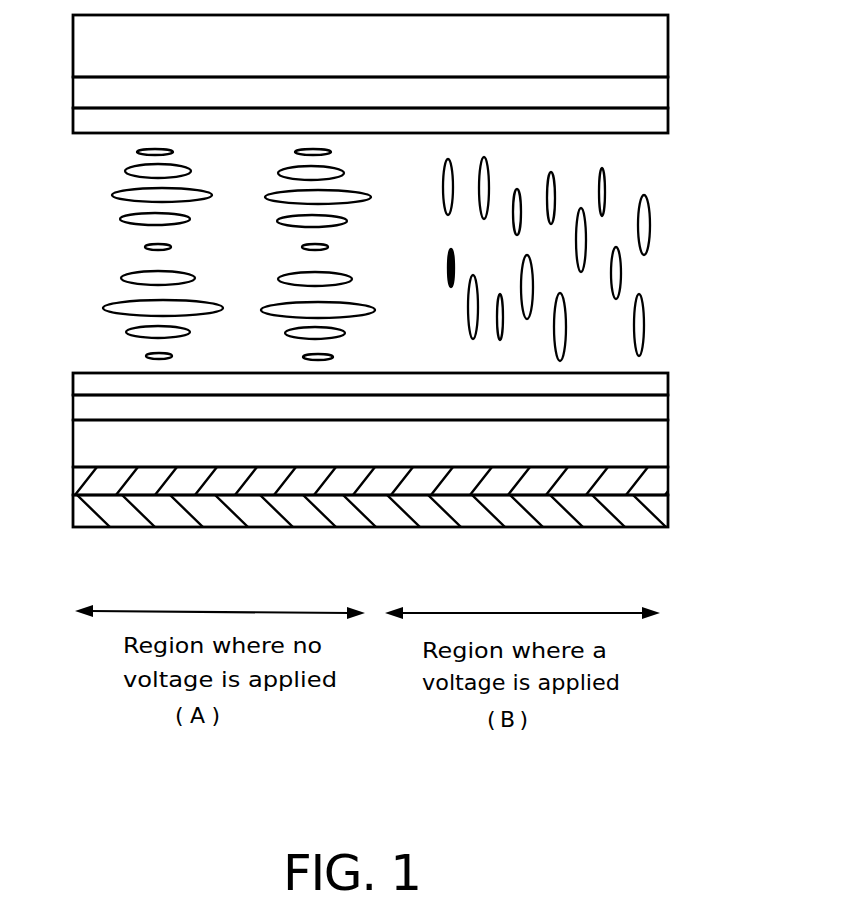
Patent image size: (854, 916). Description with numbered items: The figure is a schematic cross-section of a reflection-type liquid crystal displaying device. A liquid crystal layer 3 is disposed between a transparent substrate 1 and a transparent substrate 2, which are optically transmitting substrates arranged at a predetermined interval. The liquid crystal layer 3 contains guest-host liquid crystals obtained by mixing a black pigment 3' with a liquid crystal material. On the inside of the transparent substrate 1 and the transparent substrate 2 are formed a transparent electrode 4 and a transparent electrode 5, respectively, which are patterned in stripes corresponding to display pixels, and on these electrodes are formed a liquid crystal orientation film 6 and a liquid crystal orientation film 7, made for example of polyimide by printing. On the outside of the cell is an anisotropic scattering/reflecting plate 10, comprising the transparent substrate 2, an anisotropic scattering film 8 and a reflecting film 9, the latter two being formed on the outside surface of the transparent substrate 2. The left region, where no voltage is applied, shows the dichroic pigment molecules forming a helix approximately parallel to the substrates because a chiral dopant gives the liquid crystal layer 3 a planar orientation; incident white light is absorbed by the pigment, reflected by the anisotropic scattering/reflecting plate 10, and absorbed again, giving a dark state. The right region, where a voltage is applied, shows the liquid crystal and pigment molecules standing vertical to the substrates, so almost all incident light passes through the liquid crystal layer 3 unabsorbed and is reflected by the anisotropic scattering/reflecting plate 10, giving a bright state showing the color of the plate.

The transparent substrate 1 is at (387, 46).
The transparent substrate 2 is at (389, 443).
The liquid crystal layer 3 is at (404, 255).
The black pigment 3' is at (658, 273).
The transparent electrode 4 is at (388, 93).
The transparent electrode 5 is at (389, 410).
The liquid crystal orientation film 6 is at (388, 124).
The liquid crystal orientation film 7 is at (389, 386).
The anisotropic scattering film 8 is at (389, 481).
The reflecting film 9 is at (389, 512).
The anisotropic scattering/reflecting plate 10 is at (725, 445).